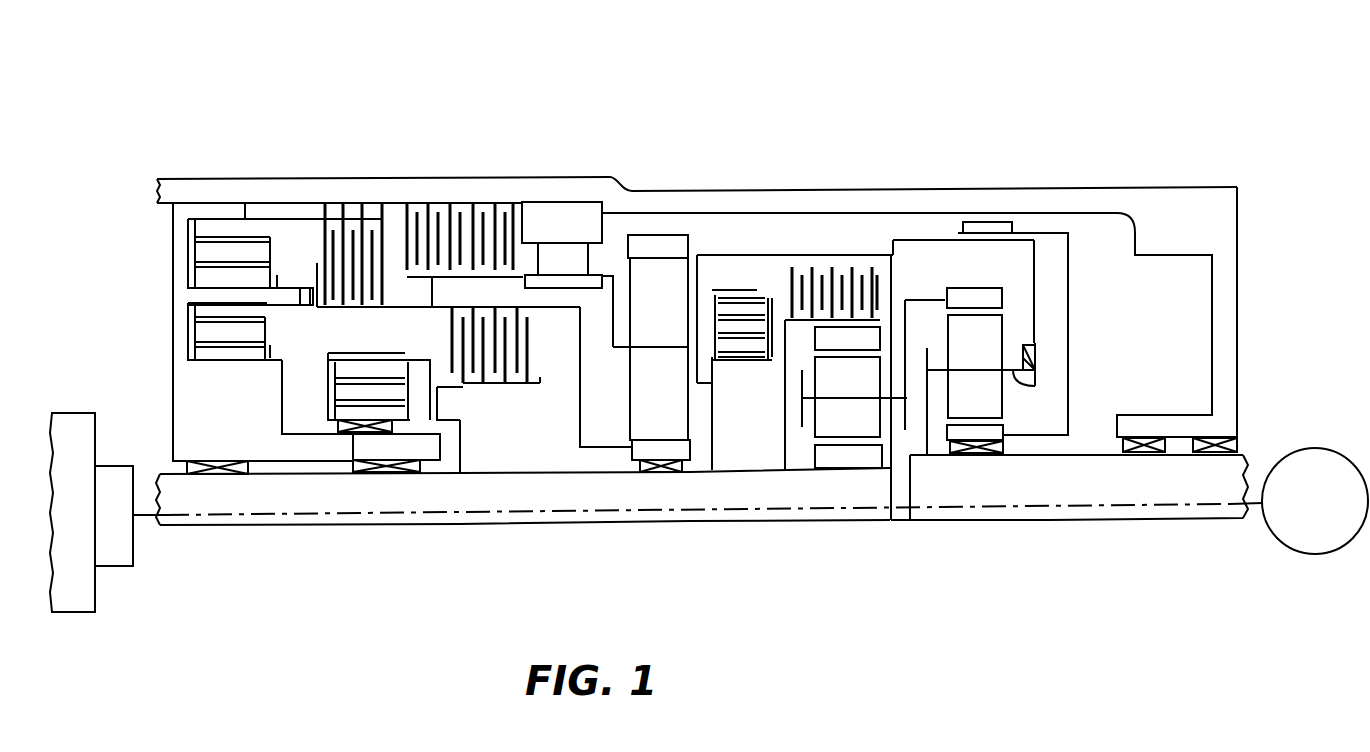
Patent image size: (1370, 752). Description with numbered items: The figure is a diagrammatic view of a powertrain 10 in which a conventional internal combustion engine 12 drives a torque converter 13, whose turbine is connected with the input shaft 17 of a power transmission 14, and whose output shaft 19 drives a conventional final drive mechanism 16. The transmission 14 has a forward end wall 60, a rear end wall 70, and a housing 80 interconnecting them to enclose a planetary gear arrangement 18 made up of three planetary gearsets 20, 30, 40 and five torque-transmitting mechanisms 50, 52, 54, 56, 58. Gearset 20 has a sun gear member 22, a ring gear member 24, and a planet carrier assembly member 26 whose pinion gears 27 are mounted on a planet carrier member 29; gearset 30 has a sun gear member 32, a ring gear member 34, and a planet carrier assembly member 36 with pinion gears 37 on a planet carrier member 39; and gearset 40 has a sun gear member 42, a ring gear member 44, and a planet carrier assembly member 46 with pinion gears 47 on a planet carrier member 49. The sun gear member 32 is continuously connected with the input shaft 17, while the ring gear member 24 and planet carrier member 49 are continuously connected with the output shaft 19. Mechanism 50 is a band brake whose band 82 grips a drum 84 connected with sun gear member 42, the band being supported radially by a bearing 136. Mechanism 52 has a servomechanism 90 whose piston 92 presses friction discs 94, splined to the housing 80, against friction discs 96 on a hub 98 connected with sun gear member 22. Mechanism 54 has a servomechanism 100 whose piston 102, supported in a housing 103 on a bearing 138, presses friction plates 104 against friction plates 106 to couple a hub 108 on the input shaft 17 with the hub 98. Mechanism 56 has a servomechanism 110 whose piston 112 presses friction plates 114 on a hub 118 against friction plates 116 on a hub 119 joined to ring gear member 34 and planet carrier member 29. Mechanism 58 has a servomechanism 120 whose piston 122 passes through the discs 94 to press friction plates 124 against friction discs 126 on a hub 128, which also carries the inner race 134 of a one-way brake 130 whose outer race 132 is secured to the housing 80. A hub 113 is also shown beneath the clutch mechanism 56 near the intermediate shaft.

The powertrain 10 is at (691, 132).
The internal combustion engine 12 is at (74, 482).
The torque converter 13 is at (122, 488).
The power transmission 14 is at (421, 137).
The final drive mechanism 16 is at (1315, 474).
The input shaft 17 is at (328, 500).
The planetary gear arrangement 18 is at (575, 505).
The output shaft 19 is at (1030, 523).
The planetary gearset 20 is at (638, 508).
The sun gear member 22 is at (675, 488).
The ring gear member 24 is at (665, 240).
The planet carrier assembly member 26 is at (700, 255).
The pinion gears 27 is at (671, 313).
The planet carrier member 29 is at (625, 397).
The planetary gearset 30 is at (790, 508).
The sun gear member 32 is at (813, 455).
The ring gear member 34 is at (914, 253).
The planet carrier assembly member 36 is at (907, 282).
The pinion gears 37 is at (859, 389).
The planet carrier member 39 is at (898, 520).
The planetary gearset 40 is at (970, 502).
The sun gear member 42 is at (1003, 440).
The ring gear member 44 is at (972, 297).
The planet carrier assembly member 46 is at (1071, 341).
The pinion gears 47 is at (984, 350).
The planet carrier member 49 is at (1035, 383).
The torque-transmitting mechanism 50 is at (1013, 274).
The torque-transmitting mechanism 52 is at (255, 323).
The torque-transmitting mechanism 54 is at (475, 414).
The torque-transmitting mechanism 56 is at (732, 342).
The torque-transmitting mechanism 58 is at (452, 153).
The forward end wall 60 is at (226, 329).
The rear end wall 70 is at (1216, 319).
The housing 80 is at (859, 163).
The band 82 is at (1007, 222).
The drum 84 is at (1080, 233).
The servomechanism 90 is at (231, 365).
The piston 92 is at (317, 295).
The friction discs 94 is at (323, 247).
The friction discs 96 is at (380, 262).
The hub 98 is at (548, 310).
The servomechanism 100 is at (369, 452).
The piston 102 is at (427, 365).
The housing 103 is at (478, 450).
The friction plates 104 is at (545, 400).
The friction plates 106 is at (473, 310).
The hub 108 is at (473, 388).
The servomechanism 110 is at (743, 346).
The piston 112 is at (770, 298).
The hub 113 is at (700, 423).
The friction plates 114 is at (782, 302).
The friction plates 116 is at (820, 285).
The hub 118 is at (783, 448).
The hub 119 is at (882, 255).
The servomechanism 120 is at (285, 170).
The piston 122 is at (263, 202).
The friction plates 124 is at (436, 245).
The friction discs 126 is at (458, 245).
The hub 128 is at (430, 303).
The one-way brake 130 is at (579, 178).
The outer race 132 is at (590, 228).
The inner race 134 is at (605, 262).
The bearing 136 is at (998, 502).
The bearing 138 is at (340, 440).